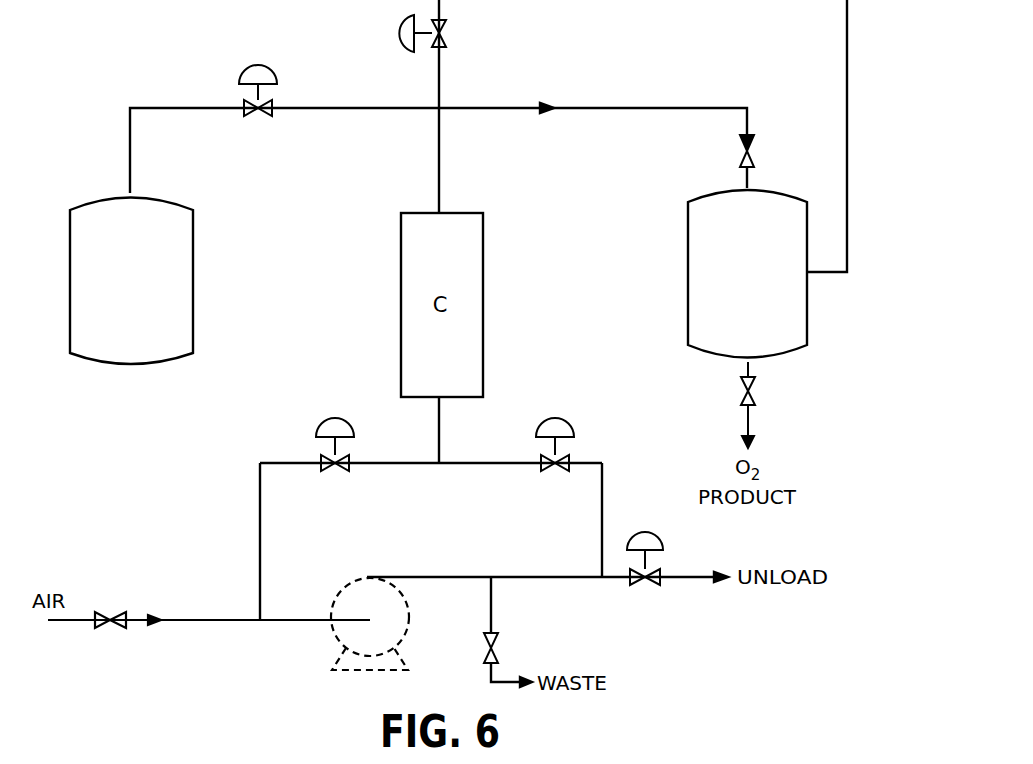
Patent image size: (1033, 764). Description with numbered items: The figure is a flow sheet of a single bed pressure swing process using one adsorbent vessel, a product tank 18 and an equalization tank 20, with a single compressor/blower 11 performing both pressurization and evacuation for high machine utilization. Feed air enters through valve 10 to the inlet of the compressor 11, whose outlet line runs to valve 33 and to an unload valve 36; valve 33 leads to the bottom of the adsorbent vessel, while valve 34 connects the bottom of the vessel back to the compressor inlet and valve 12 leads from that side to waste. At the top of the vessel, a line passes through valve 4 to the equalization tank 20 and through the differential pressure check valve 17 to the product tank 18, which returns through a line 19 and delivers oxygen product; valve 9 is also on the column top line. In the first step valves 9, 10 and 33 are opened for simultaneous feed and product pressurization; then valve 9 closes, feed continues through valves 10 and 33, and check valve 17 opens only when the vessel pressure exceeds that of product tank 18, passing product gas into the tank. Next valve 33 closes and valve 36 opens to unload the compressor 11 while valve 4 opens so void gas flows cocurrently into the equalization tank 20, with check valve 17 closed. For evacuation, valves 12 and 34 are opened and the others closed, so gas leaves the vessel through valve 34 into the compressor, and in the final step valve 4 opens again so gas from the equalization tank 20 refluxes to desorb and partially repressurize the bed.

The valve 4 is at (258, 105).
The valve 9 is at (431, 33).
The valve 10 is at (209, 635).
The compressor/blower 11 is at (370, 624).
The valve 12 is at (508, 647).
The differential pressure check valve 17 is at (761, 151).
The product tank 18 is at (747, 262).
The return line 19 is at (843, 136).
The equalization tank 20 is at (131, 281).
The valve 33 is at (555, 457).
The valve 34 is at (335, 457).
The valve 36 is at (645, 570).